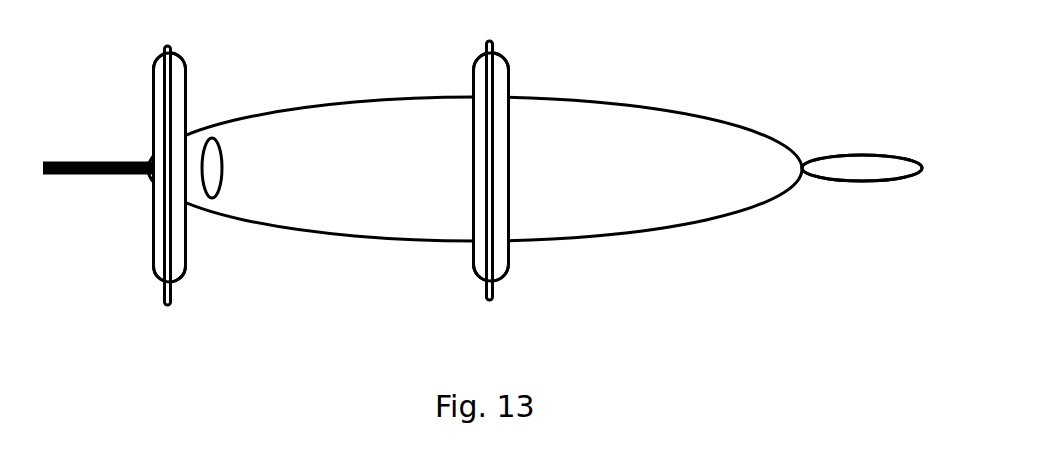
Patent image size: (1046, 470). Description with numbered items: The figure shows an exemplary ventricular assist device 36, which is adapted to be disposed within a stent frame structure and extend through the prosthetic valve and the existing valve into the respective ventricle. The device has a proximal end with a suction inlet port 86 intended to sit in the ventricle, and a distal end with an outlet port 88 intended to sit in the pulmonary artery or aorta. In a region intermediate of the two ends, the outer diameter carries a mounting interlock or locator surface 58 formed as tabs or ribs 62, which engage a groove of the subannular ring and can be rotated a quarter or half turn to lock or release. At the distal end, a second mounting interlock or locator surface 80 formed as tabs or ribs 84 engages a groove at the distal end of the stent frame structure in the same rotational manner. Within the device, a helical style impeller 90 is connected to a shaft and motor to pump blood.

The ventricular assist device 36 is at (700, 285).
The mounting interlock or locator surface 58 is at (495, 300).
The tabs or ribs 62 is at (491, 167).
The mounting interlock or locator surface 80 is at (173, 283).
The tabs or ribs 84 is at (170, 167).
The suction inlet port 86 is at (853, 175).
The outlet port 88 is at (208, 168).
The helical style impeller 90 is at (862, 168).